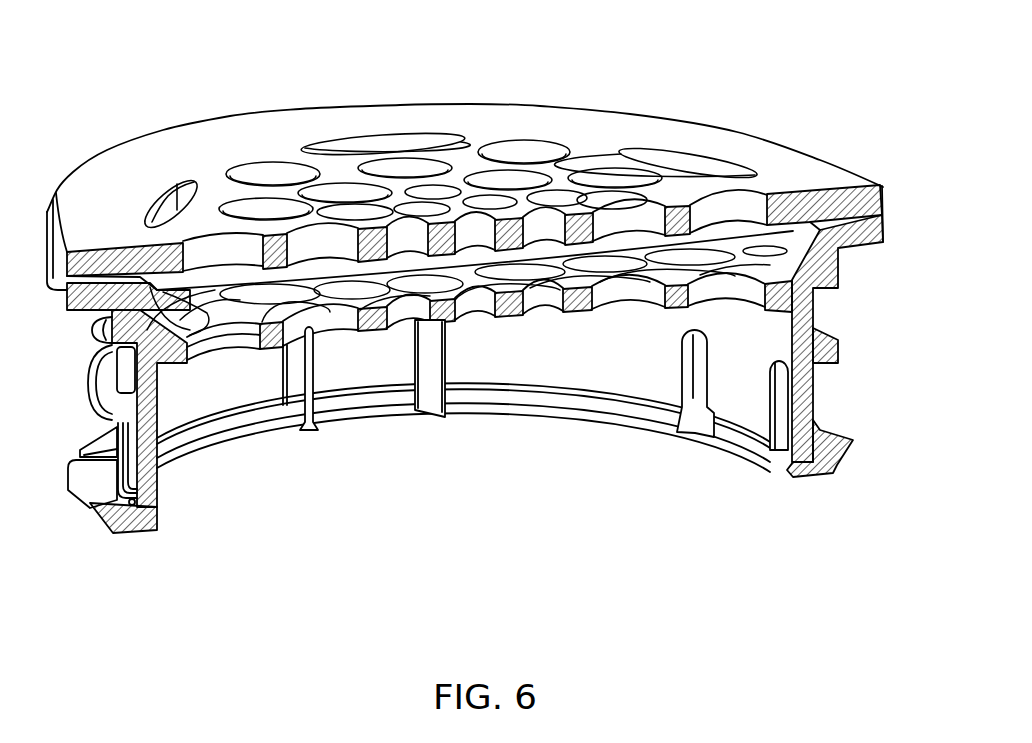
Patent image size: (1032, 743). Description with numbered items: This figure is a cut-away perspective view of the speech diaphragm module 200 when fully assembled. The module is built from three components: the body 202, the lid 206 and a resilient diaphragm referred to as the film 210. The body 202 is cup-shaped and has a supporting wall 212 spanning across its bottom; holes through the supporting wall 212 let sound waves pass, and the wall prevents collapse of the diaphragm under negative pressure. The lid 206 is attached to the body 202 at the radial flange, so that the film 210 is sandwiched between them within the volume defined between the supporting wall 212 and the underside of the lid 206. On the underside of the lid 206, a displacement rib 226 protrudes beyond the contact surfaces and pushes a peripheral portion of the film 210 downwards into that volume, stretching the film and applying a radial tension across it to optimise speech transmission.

The speech diaphragm module 200 is at (475, 344).
The body 202 is at (485, 374).
The lid 206 is at (733, 132).
The film 210 is at (222, 268).
The supporting wall 212 is at (507, 316).
The displacement rib 226 is at (838, 260).